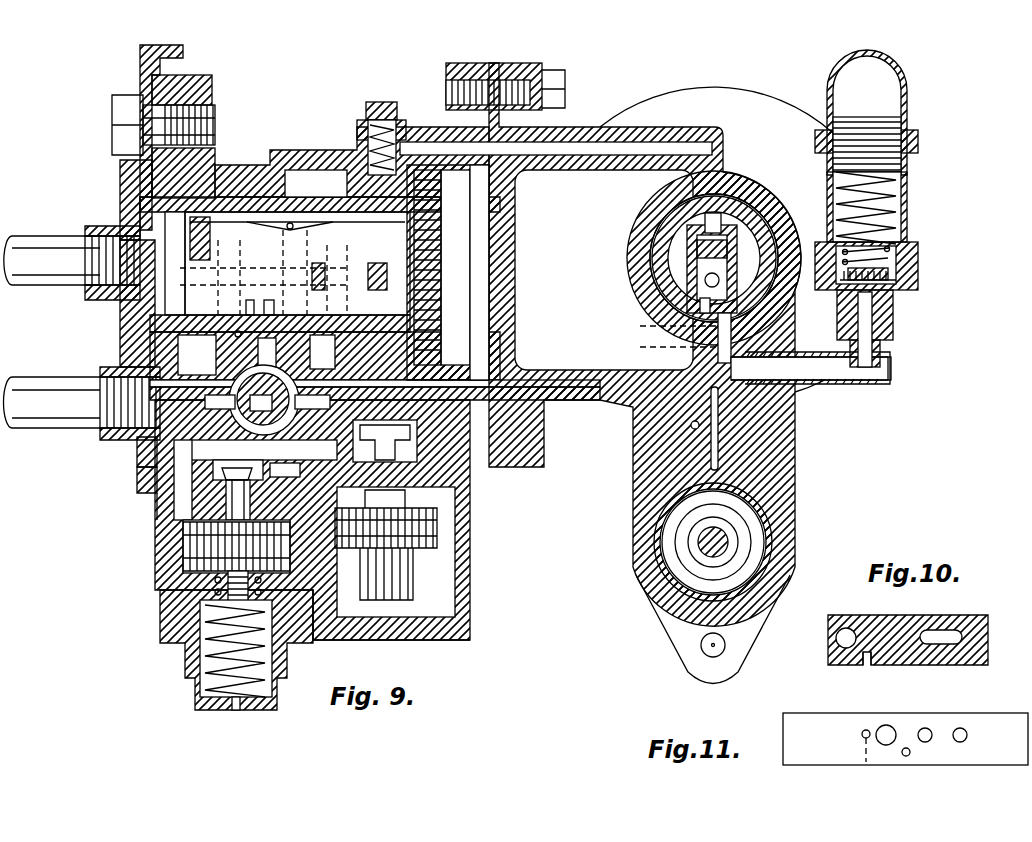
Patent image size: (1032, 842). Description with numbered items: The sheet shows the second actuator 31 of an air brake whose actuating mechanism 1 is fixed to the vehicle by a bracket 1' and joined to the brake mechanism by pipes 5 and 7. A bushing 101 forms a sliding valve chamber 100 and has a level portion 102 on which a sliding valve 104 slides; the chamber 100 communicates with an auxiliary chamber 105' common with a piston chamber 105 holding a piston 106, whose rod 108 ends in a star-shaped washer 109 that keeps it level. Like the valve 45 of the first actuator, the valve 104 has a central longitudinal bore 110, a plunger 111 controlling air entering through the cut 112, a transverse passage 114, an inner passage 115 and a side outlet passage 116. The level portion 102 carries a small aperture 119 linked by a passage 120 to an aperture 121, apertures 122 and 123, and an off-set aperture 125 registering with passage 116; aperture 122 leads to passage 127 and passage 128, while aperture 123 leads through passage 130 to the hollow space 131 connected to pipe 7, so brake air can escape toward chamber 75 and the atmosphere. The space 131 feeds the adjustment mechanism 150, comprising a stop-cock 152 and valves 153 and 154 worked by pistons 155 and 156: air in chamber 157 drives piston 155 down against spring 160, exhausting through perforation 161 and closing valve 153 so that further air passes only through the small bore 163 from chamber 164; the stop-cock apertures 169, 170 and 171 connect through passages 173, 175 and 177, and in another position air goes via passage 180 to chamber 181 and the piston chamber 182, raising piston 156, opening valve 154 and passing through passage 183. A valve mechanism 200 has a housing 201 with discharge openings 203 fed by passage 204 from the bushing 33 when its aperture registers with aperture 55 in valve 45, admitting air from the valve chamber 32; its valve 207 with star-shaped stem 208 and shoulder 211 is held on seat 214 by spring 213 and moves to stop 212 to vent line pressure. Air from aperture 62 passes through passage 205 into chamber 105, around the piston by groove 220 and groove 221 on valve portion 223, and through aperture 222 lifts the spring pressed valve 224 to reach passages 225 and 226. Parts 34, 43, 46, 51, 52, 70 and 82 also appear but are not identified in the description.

In FIG. 9, the actuating mechanism 1 is at (725, 213).
In FIG. 9, the bracket 1' is at (161, 123).
In FIG. 9, the pipe 5 is at (22, 240).
In FIG. 9, the pipe 7 is at (30, 384).
In FIG. 9, the second actuator 31 is at (306, 116).
In FIG. 9, the valve chamber 32 is at (690, 240).
In FIG. 9, the bushing 33 is at (660, 262).
In FIG. 9, the passage 34 is at (705, 320).
In FIG. 9, the valve member 43 is at (697, 248).
In FIG. 9, the sliding valve 45 is at (752, 248).
In FIG. 9, the port 46 is at (705, 280).
In FIG. 9, the plug 51 is at (712, 225).
In FIG. 9, the valve 52 is at (700, 306).
In FIG. 9, the aperture 55 is at (738, 290).
In FIG. 9, the aperture 62 is at (640, 326).
In FIG. 9, the body 70 is at (690, 426).
In FIG. 9, the chamber 75 is at (665, 568).
In FIG. 9, the shaft bearing 82 is at (700, 542).
In FIG. 9, the sliding valve chamber 100 is at (200, 228).
In FIG. 9, the bushing 101 is at (170, 197).
In FIG. 9, the level portion 102 is at (165, 325).
In FIG. 11, the level portion 102 is at (1006, 722).
In FIG. 9, the sliding valve 104 is at (222, 232).
In FIG. 10, the sliding valve 104 is at (988, 642).
In FIG. 9, the piston chamber 105 is at (468, 261).
In FIG. 9, the auxiliary chamber 105' is at (604, 270).
In FIG. 9, the piston 106 is at (415, 318).
In FIG. 9, the rod 108 is at (395, 250).
In FIG. 9, the star-shaped washer 109 is at (185, 245).
In FIG. 9, the central longitudinal bore 110 is at (300, 276).
In FIG. 9, the plunger 111 is at (378, 263).
In FIG. 9, the cut 112 is at (315, 262).
In FIG. 9, the transverse passage 114 is at (123, 263).
In FIG. 10, the transverse passage 114 is at (846, 628).
In FIG. 9, the inner passage 115 is at (356, 292).
In FIG. 10, the inner passage 115 is at (942, 630).
In FIG. 9, the side outlet passage 116 is at (250, 300).
In FIG. 10, the side outlet passage 116 is at (868, 665).
In FIG. 9, the small aperture 119 is at (235, 335).
In FIG. 11, the small aperture 119 is at (862, 730).
In FIG. 9, the passage 120 is at (235, 348).
In FIG. 11, the passage 120 is at (866, 762).
In FIG. 9, the aperture 121 is at (270, 300).
In FIG. 11, the aperture 121 is at (886, 725).
In FIG. 9, the aperture 122 is at (300, 338).
In FIG. 11, the aperture 122 is at (926, 728).
In FIG. 9, the aperture 123 is at (352, 335).
In FIG. 11, the aperture 123 is at (962, 728).
In FIG. 11, the off-set small aperture 125 is at (906, 757).
In FIG. 9, the passage 127 is at (585, 385).
In FIG. 9, the passage 128 is at (804, 468).
In FIG. 9, the passage 130 is at (150, 308).
In FIG. 9, the hollow space 131 is at (178, 386).
In FIG. 9, the mechanism for individual adjustment 150 is at (115, 490).
In FIG. 9, the stop-cock 152 is at (245, 380).
In FIG. 9, the valve 153 is at (175, 455).
In FIG. 9, the valve 154 is at (385, 439).
In FIG. 9, the piston 155 is at (195, 522).
In FIG. 9, the piston 156 is at (437, 518).
In FIG. 9, the chamber 157 is at (192, 480).
In FIG. 9, the spring 160 is at (210, 656).
In FIG. 9, the perforation 161 is at (237, 708).
In FIG. 9, the small bore 163 is at (165, 478).
In FIG. 9, the valve chamber 164 is at (160, 437).
In FIG. 9, the aperture 169 is at (264, 400).
In FIG. 9, the aperture 170 is at (235, 415).
In FIG. 9, the aperture 171 is at (240, 390).
In FIG. 9, the passage 173 is at (268, 347).
In FIG. 9, the short passage 175 is at (263, 450).
In FIG. 9, the passage 177 is at (228, 402).
In FIG. 9, the passage 180 is at (455, 470).
In FIG. 9, the chamber 181 is at (398, 423).
In FIG. 9, the piston chamber 182 is at (400, 618).
In FIG. 9, the passage 183 is at (300, 450).
In FIG. 9, the valve mechanism 200 is at (920, 212).
In FIG. 9, the housing 201 is at (907, 218).
In FIG. 9, the discharge openings 203 is at (915, 270).
In FIG. 9, the passage 204 is at (790, 350).
In FIG. 9, the passage 205 is at (655, 347).
In FIG. 9, the valve 207 is at (912, 251).
In FIG. 9, the star-shaped stem 208 is at (880, 322).
In FIG. 9, the broad shoulder 211 is at (905, 288).
In FIG. 9, the stop 212 is at (903, 236).
In FIG. 9, the spring 213 is at (836, 178).
In FIG. 9, the seat 214 is at (850, 298).
In FIG. 9, the groove 220 is at (428, 170).
In FIG. 9, the groove 221 is at (415, 295).
In FIG. 9, the aperture 222 is at (418, 228).
In FIG. 9, the valve portion 223 is at (420, 340).
In FIG. 9, the spring pressed valve 224 is at (375, 150).
In FIG. 9, the passage 225 is at (578, 140).
In FIG. 9, the passage 226 is at (360, 148).